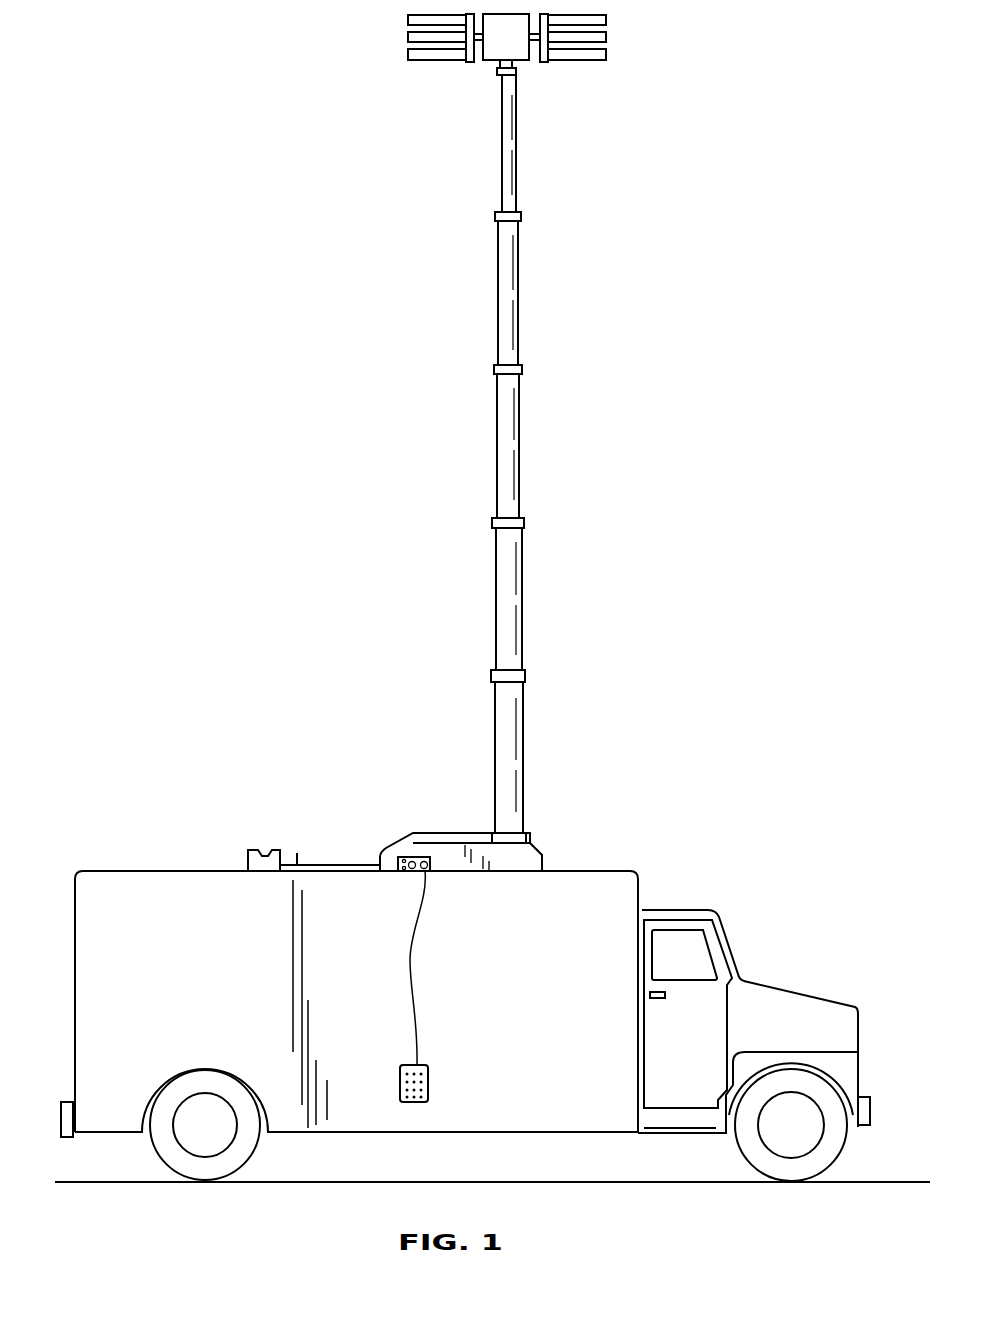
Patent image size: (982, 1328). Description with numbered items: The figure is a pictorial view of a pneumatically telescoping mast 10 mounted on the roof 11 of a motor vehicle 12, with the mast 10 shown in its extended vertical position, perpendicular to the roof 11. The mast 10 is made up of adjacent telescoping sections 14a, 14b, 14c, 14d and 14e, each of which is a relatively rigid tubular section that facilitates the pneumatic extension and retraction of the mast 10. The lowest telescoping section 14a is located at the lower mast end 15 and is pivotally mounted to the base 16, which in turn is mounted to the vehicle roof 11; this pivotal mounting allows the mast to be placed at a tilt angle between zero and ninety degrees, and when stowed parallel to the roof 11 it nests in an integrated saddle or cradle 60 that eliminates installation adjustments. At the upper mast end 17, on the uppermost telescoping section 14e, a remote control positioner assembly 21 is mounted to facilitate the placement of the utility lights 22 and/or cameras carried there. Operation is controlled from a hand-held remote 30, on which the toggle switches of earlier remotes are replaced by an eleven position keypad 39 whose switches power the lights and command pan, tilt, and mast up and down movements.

The telescoping mast 10 is at (556, 538).
The roof 11 is at (590, 870).
The motor vehicle 12 is at (674, 898).
The telescoping section 14a is at (495, 716).
The telescoping section 14b is at (496, 578).
The telescoping section 14c is at (497, 434).
The telescoping section 14d is at (498, 281).
The telescoping section 14e is at (502, 152).
The lower mast end 15 is at (493, 832).
The base 16 is at (437, 832).
The upper mast end 17 is at (516, 71).
The remote control positioner assembly 21 is at (493, 48).
The utility lights 22 is at (416, 62).
The hand-held remote 30 is at (433, 1081).
The keypad 39 is at (398, 1076).
The cradle 60 is at (266, 849).